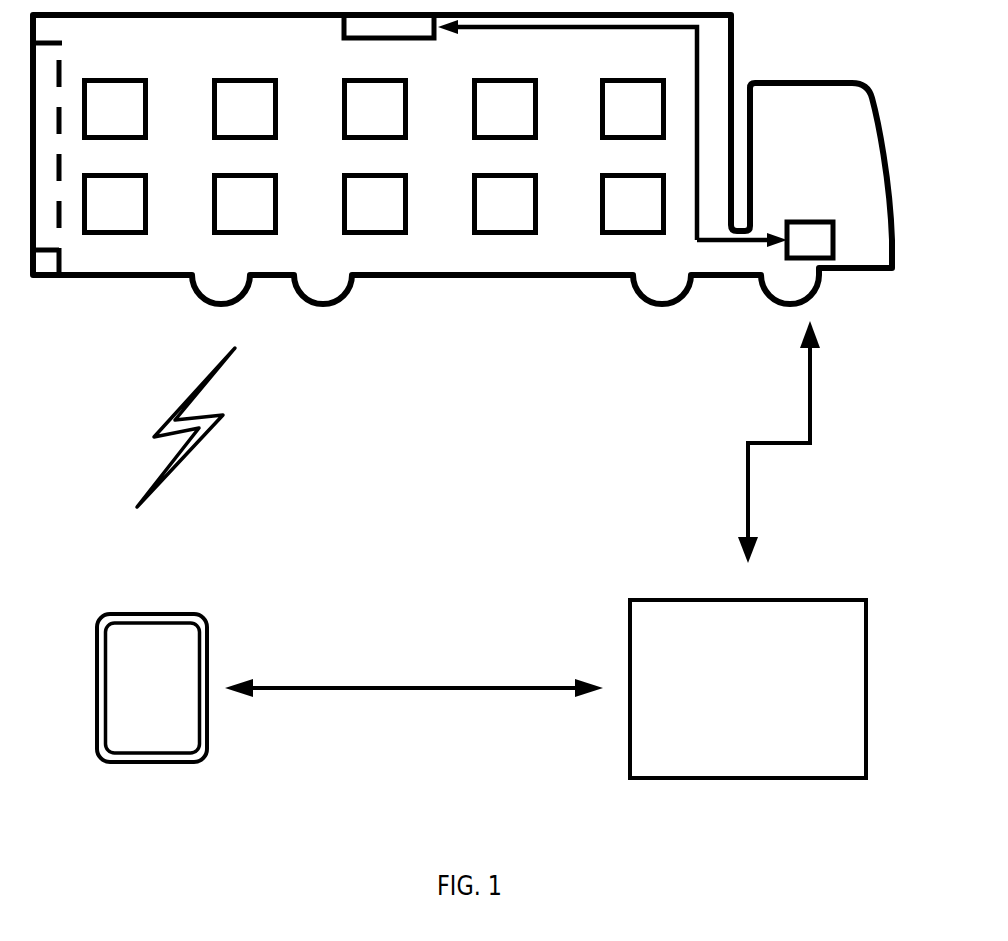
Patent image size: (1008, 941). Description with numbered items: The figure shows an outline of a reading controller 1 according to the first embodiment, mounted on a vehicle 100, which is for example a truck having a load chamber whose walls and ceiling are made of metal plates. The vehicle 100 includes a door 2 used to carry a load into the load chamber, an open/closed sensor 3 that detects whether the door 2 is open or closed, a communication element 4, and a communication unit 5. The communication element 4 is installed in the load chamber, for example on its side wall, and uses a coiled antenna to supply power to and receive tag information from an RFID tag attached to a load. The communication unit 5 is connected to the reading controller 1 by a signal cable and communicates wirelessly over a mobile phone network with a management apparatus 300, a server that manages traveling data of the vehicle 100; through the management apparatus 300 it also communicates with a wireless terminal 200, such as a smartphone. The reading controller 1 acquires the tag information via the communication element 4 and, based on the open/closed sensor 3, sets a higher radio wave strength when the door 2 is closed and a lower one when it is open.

The reading controller 1 is at (402, 40).
The door 2 is at (60, 62).
The open/closed sensor 3 is at (59, 267).
The communication element 4 is at (145, 78).
The communication unit 5 is at (830, 222).
The vehicle 100 is at (847, 85).
The wireless terminal 200 is at (202, 617).
The management apparatus 300 is at (858, 580).